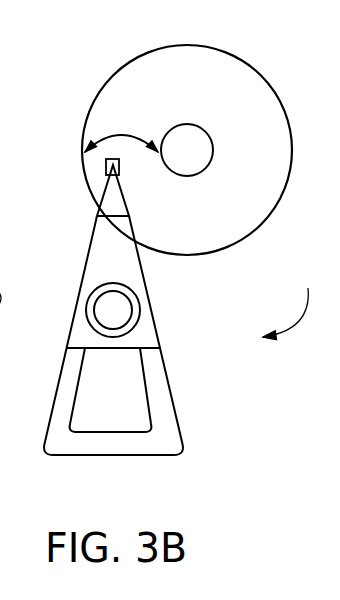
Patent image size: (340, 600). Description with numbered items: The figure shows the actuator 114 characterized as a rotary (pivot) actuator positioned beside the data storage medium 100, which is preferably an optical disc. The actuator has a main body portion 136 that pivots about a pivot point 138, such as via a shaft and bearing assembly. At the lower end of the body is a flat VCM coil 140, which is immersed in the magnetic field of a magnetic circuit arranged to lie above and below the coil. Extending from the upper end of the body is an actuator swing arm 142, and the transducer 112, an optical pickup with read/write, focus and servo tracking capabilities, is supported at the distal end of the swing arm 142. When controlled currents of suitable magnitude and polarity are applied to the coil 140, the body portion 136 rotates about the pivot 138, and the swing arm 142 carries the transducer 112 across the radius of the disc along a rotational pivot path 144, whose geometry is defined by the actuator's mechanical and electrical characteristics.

The data storage medium 100 is at (217, 55).
The transducer 112 is at (120, 168).
The actuator 114 is at (294, 304).
The main body portion 136 is at (105, 270).
The pivot point 138 is at (120, 311).
The flat VCM coil 140 is at (113, 445).
The actuator swing arm 142 is at (108, 198).
The rotational (pivot) path 144 is at (112, 135).